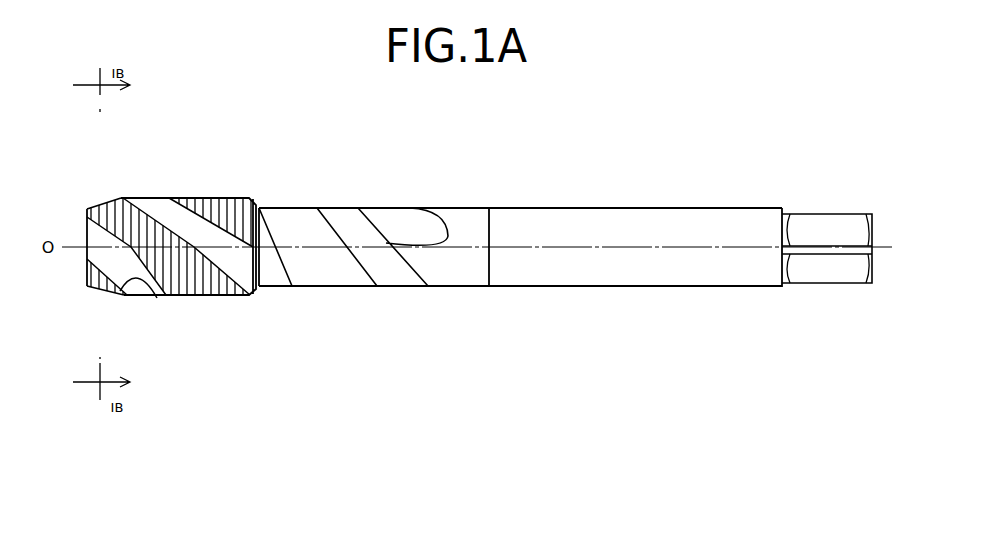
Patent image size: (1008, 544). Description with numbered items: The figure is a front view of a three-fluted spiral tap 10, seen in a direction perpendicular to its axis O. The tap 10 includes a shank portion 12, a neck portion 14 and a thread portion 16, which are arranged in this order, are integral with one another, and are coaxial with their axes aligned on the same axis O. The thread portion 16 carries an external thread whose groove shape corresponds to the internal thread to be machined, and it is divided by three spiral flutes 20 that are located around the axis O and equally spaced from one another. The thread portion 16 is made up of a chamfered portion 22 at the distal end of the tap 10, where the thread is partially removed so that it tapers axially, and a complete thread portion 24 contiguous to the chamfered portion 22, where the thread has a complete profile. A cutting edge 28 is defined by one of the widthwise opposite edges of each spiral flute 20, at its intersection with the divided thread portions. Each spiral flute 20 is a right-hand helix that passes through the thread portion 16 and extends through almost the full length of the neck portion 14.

The three-fluted spiral tap 10 is at (684, 150).
The shank portion 12 is at (662, 272).
The neck portion 14 is at (460, 223).
The thread portion 16 is at (110, 308).
The spiral flutes 20 is at (253, 268).
The chamfered portion 22 is at (83, 170).
The complete thread portion 24 is at (122, 170).
The cutting edge 28 is at (129, 201).